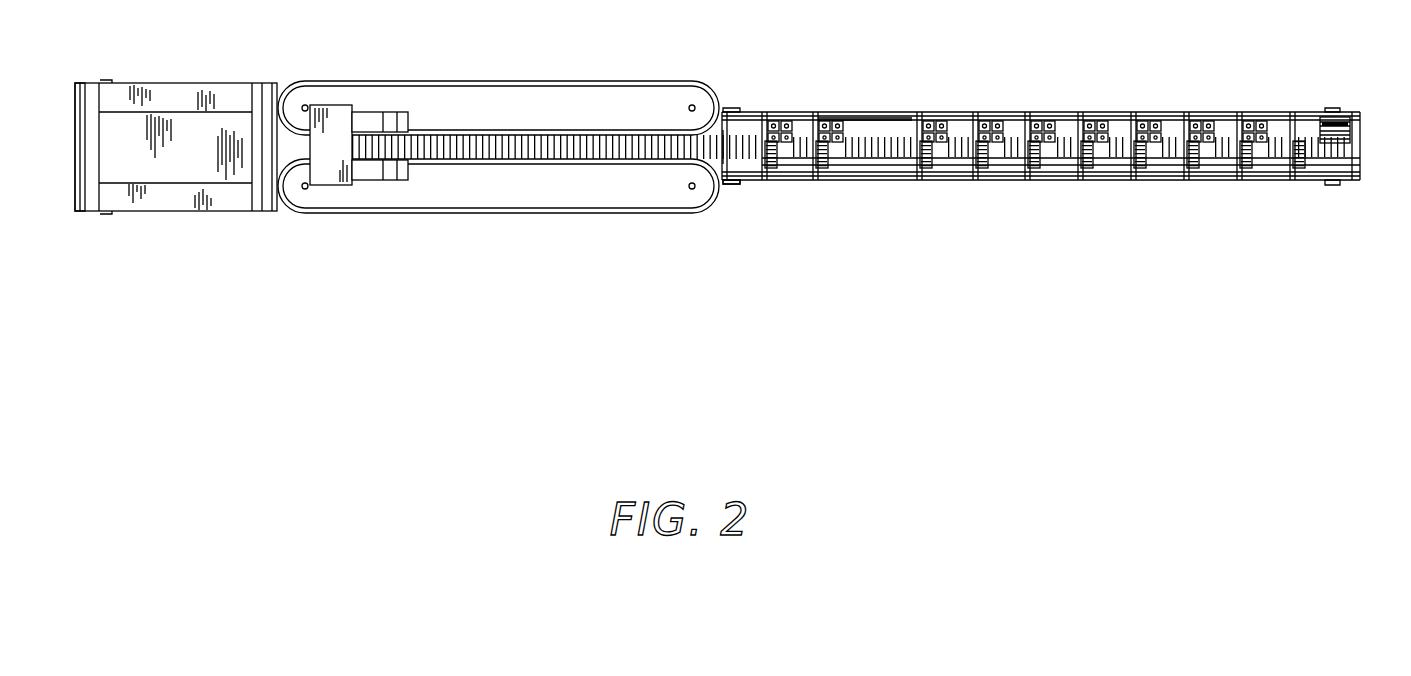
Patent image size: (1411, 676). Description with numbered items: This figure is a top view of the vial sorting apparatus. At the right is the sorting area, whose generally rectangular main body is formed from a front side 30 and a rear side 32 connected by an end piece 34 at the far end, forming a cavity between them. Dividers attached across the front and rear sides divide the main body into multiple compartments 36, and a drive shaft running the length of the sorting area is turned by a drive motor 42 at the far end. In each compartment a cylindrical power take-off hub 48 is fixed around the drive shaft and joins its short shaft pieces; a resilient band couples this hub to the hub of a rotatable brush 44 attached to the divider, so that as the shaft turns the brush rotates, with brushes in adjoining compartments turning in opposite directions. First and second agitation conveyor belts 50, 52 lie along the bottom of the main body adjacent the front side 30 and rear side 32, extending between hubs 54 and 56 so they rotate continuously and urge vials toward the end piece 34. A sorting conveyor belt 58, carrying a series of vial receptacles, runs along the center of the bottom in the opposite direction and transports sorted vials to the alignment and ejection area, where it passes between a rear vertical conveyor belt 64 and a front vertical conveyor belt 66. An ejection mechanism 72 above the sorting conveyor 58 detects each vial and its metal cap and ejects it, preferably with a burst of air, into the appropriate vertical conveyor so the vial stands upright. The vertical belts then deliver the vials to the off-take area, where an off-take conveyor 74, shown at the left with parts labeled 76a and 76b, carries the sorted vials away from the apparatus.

The front side 30 is at (900, 182).
The rear side 32 is at (905, 112).
The end piece 34 is at (1360, 160).
The compartments 36 is at (1165, 167).
The drive motor 42 is at (1330, 113).
The rotatable brush 44 is at (984, 168).
The power take-off hub 48 is at (1096, 122).
The first agitation conveyor belt 50 is at (866, 122).
The second agitation conveyor belt 52 is at (862, 165).
The hub 54 is at (735, 185).
The hub 56 is at (1333, 186).
The sorting conveyor belt 58 is at (728, 112).
The rear vertical conveyor belt 64 is at (440, 81).
The front vertical conveyor belt 66 is at (428, 213).
The ejection mechanism 72 is at (345, 120).
The off-take conveyor 74 is at (178, 165).
The end cap 76a is at (85, 212).
The bracket 76b is at (395, 182).